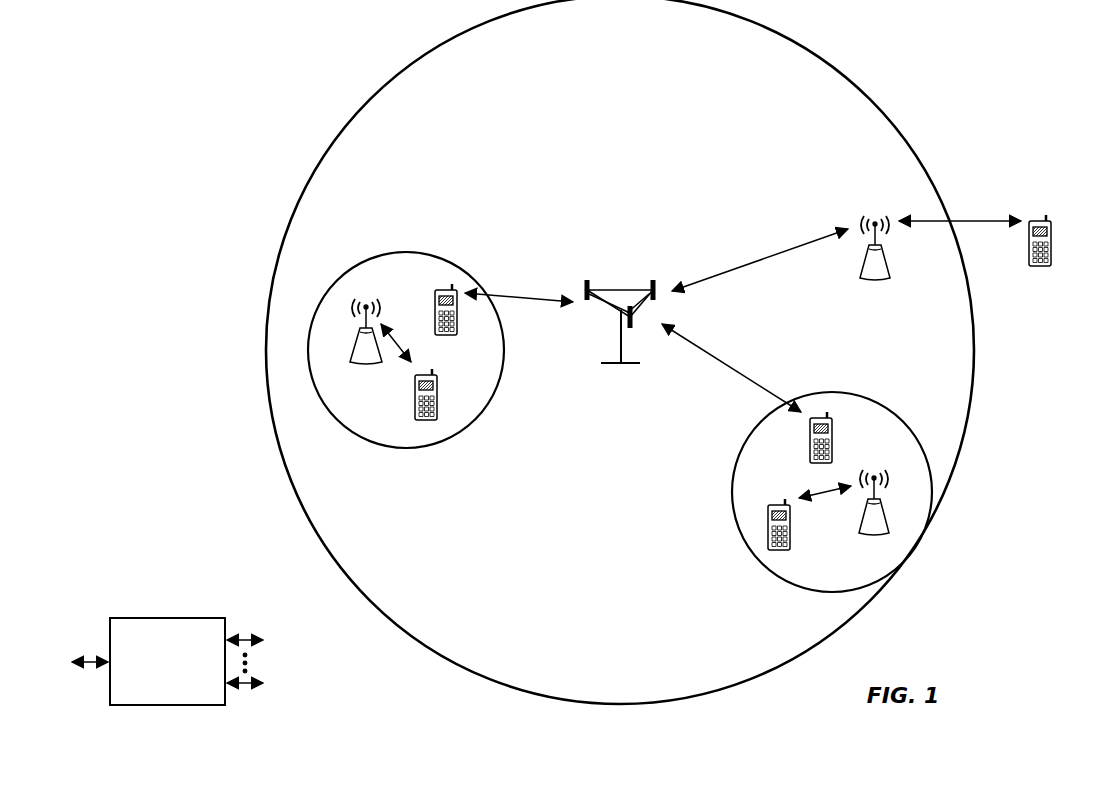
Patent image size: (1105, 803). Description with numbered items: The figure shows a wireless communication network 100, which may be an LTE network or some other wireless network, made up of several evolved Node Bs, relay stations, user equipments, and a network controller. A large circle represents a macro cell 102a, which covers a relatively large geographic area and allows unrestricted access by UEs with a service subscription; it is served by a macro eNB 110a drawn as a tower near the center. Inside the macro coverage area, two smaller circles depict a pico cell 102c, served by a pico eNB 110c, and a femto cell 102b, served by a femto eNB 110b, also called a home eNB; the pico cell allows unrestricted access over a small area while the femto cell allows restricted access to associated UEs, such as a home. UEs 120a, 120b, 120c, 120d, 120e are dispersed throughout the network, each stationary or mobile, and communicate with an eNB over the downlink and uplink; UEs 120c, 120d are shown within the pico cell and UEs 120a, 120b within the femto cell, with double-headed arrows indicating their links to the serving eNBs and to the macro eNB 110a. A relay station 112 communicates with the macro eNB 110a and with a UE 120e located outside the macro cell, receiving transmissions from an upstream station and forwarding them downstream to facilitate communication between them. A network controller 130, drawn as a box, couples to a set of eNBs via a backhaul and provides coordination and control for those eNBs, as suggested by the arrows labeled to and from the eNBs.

The wireless communication network 100 is at (280, 50).
The macro cell 102a is at (851, 78).
The femto cell 102b is at (880, 404).
The pico cell 102c is at (404, 252).
The macro eNB 110a is at (618, 288).
The femto eNB 110b is at (894, 521).
The pico eNB 110c is at (352, 352).
The relay station 112 is at (889, 267).
The UE 120a is at (834, 428).
The UE 120b is at (767, 516).
The UE 120c is at (439, 385).
The UE 120d is at (434, 298).
The UE 120e is at (1052, 231).
The network controller 130 is at (162, 617).